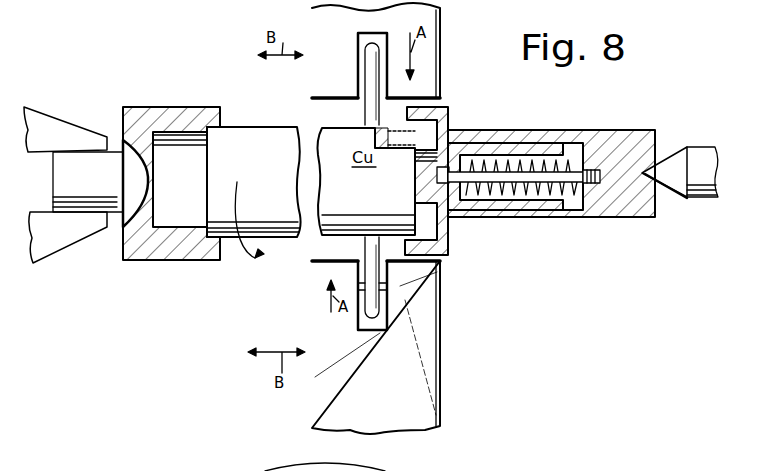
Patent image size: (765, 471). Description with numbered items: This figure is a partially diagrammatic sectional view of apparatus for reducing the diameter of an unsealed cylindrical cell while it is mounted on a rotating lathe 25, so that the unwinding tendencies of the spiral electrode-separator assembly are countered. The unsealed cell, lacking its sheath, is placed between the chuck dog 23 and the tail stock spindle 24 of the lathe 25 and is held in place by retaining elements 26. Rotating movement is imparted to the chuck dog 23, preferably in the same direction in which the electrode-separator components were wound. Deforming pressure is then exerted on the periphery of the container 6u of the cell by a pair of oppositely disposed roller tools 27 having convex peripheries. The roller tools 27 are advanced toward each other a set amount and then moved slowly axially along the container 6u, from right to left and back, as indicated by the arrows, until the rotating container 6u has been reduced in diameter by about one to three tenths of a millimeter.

The lathe 25 is at (65, 122).
The chuck dog 23 is at (177, 115).
The container 6u is at (265, 137).
The roller tools 27 is at (373, 63).
The retaining elements 26 is at (551, 196).
The tail stock spindle 24 is at (696, 198).